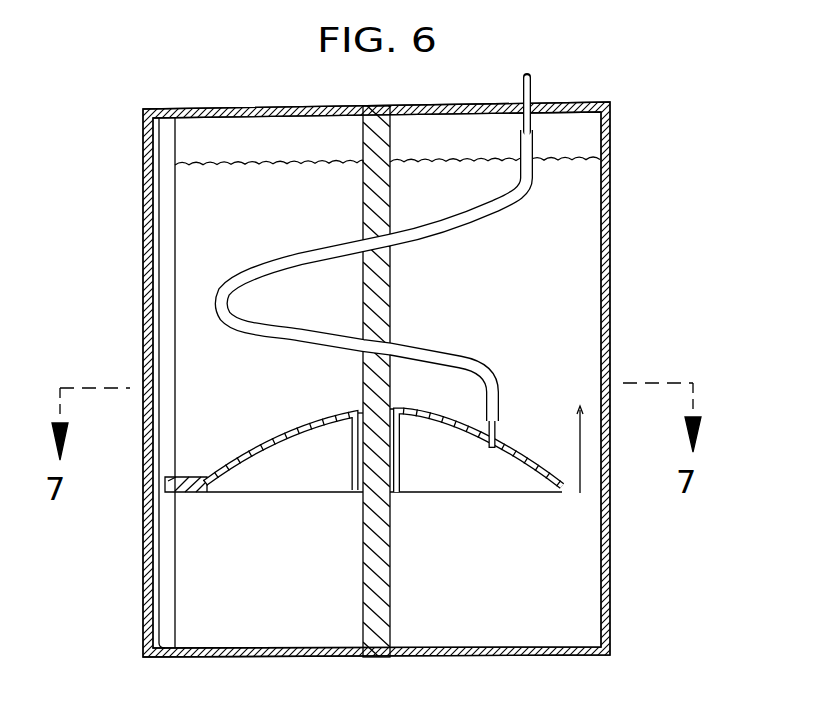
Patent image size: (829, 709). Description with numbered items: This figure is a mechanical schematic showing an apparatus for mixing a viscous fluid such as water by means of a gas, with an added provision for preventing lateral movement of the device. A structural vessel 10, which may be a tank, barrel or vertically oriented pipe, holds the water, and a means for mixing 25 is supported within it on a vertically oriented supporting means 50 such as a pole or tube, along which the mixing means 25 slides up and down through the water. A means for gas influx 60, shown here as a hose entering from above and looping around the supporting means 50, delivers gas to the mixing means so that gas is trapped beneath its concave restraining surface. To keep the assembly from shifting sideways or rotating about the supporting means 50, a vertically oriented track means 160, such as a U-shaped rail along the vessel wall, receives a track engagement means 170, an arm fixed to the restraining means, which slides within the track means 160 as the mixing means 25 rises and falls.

The structural vessel 10 is at (610, 282).
The means for mixing 25 is at (474, 298).
The vertically oriented supporting means 50 is at (388, 532).
The means for gas influx 60 is at (536, 147).
The track means 160 is at (168, 141).
The track engagement means 170 is at (148, 490).